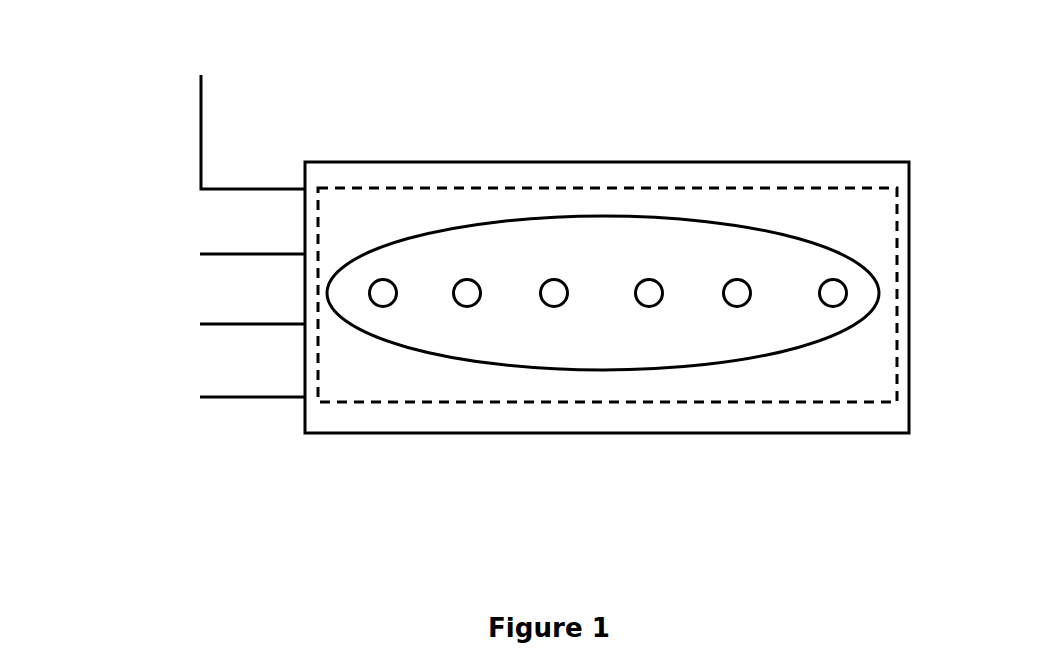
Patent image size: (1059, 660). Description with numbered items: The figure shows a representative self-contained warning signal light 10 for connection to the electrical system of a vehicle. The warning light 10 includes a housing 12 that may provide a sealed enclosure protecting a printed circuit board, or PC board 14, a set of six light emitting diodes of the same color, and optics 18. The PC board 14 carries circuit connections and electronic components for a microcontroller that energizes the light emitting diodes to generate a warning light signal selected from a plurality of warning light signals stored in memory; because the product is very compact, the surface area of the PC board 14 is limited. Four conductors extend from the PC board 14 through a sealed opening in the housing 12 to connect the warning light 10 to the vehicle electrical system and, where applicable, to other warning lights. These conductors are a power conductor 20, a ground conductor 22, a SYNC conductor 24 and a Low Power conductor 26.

The warning signal light 10 is at (393, 125).
The housing 12 is at (772, 161).
The PC board 14 is at (855, 232).
The optics 18 is at (607, 242).
The power conductor 20 is at (201, 117).
The ground conductor 22 is at (212, 250).
The SYNC conductor 24 is at (212, 320).
The Low Power conductor 26 is at (212, 392).